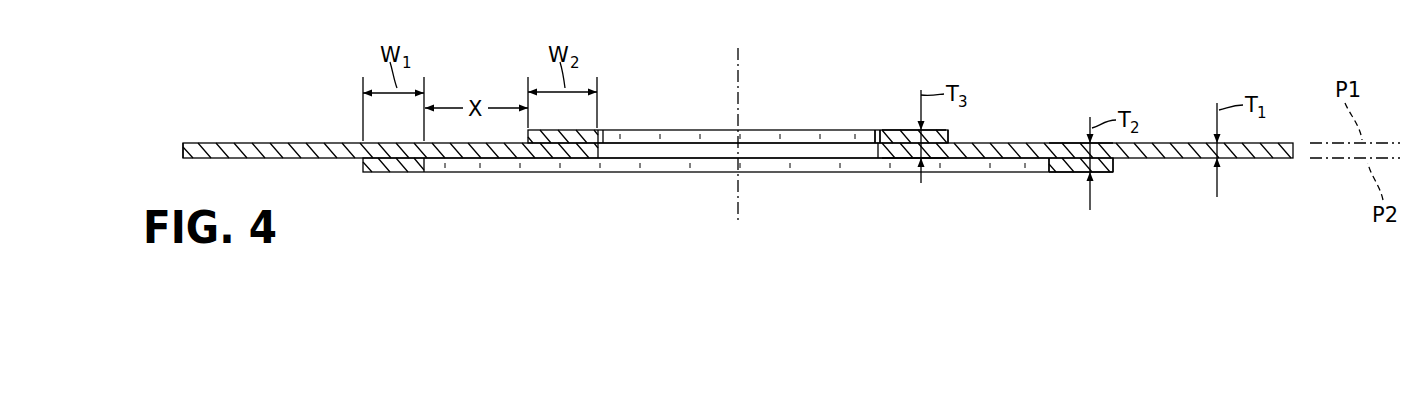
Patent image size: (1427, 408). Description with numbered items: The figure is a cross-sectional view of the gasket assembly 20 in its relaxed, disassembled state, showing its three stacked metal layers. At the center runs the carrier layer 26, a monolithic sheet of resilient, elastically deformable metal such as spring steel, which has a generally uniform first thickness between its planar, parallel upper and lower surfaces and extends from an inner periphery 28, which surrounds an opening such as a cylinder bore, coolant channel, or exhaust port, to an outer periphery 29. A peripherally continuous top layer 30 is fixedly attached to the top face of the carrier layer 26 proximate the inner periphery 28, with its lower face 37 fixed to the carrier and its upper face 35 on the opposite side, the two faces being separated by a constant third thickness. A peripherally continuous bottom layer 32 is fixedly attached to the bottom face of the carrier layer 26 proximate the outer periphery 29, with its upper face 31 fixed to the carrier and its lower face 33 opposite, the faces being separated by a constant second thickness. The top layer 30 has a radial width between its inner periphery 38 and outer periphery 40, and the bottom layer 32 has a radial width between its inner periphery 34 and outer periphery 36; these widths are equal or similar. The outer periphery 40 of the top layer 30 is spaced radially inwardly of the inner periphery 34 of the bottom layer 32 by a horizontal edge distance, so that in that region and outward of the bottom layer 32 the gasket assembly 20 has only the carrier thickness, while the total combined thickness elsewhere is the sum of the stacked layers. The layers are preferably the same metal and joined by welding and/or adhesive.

The gasket assembly 20 is at (284, 59).
The carrier layer 26 is at (1022, 143).
The inner periphery 28 is at (603, 148).
The outer periphery 29 is at (183, 152).
The top layer 30 is at (884, 136).
The upper face of bottom layer 31 is at (1062, 135).
The bottom layer 32 is at (378, 173).
The lower face of bottom layer 33 is at (1060, 181).
The inner periphery of bottom layer 34 is at (1048, 166).
The upper face of top layer 35 is at (900, 122).
The outer periphery of bottom layer 36 is at (1113, 167).
The lower face of top layer 37 is at (890, 167).
The inner periphery of top layer 38 is at (877, 142).
The outer periphery of top layer 40 is at (948, 137).